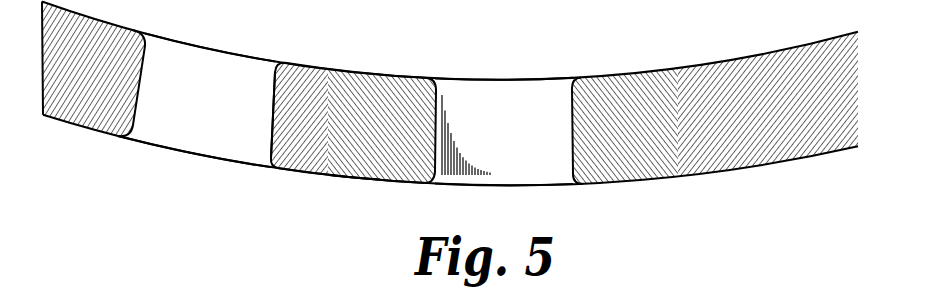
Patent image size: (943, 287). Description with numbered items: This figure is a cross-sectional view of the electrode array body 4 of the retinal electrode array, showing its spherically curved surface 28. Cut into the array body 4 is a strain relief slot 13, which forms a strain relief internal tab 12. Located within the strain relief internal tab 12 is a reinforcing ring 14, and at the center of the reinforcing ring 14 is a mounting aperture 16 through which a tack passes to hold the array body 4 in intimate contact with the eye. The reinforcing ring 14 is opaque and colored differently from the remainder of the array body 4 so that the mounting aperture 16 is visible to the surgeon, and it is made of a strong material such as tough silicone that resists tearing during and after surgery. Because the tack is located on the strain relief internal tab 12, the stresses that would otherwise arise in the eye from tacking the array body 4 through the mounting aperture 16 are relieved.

The electrode array body 4 is at (82, 88).
The strain relief internal tab 12 is at (271, 119).
The strain relief slot 13 is at (222, 121).
The reinforcing ring 14 is at (368, 144).
The mounting aperture 16 is at (492, 144).
The spherically curved surface 28 is at (353, 182).